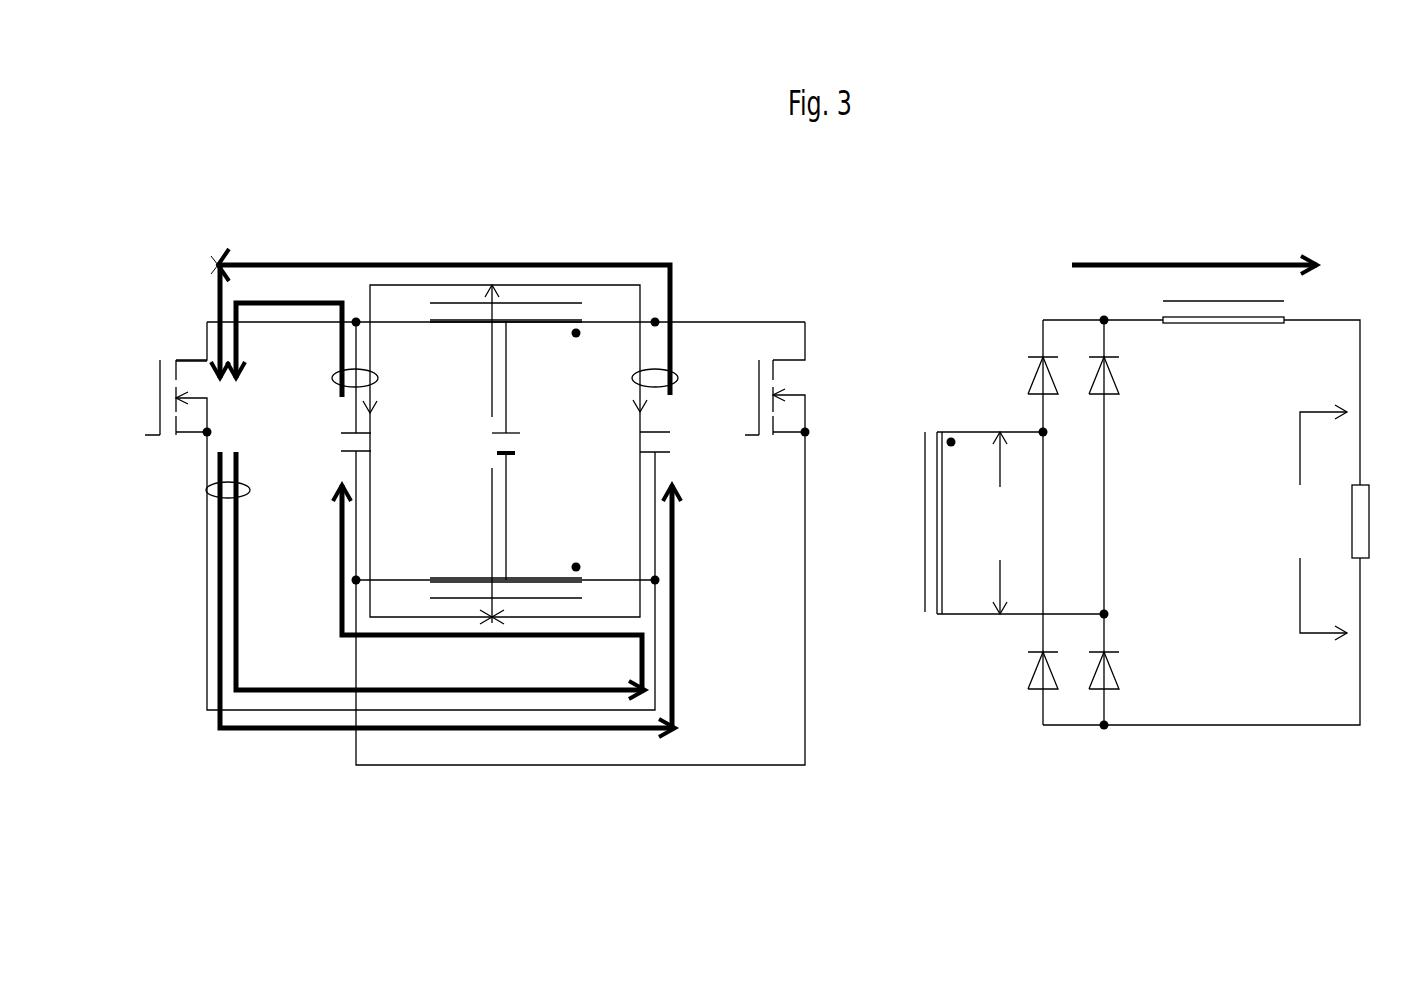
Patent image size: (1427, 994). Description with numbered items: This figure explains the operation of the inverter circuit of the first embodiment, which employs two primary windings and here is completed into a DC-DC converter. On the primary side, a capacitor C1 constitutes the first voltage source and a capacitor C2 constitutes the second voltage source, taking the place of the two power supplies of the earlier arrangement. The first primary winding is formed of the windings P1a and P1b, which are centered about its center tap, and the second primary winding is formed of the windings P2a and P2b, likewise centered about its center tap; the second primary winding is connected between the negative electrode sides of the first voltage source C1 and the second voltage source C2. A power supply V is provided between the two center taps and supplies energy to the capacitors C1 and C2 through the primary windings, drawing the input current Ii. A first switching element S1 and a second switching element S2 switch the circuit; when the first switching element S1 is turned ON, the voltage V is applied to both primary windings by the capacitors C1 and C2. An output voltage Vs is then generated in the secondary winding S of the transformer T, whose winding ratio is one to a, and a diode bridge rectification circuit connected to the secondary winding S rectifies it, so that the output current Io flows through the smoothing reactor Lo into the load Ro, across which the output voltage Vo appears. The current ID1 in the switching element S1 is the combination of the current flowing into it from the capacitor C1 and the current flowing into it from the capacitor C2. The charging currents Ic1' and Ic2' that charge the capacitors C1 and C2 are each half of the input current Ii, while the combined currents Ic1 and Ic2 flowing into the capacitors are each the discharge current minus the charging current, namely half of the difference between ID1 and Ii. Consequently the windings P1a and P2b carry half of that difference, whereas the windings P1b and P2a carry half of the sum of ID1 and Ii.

The first switching element S1 is at (203, 397).
The second switching element S2 is at (803, 397).
The capacitor C1 is at (630, 450).
The capacitor C2 is at (379, 450).
The winding P1a is at (537, 330).
The winding P1b is at (461, 330).
The winding P2a is at (537, 575).
The winding P2b is at (461, 575).
The power supply V is at (512, 469).
The input electrical current Ii is at (484, 454).
The combined electrical current Ic1 is at (683, 379).
The charging electrical current Ic1' is at (617, 388).
The combined electrical current Ic2 is at (326, 379).
The charging electrical current Ic2' is at (402, 388).
The electrical current ID1 is at (206, 490).
The transformer T is at (919, 506).
The secondary winding S is at (950, 523).
The output voltage Vs is at (1005, 523).
The reactor Lo is at (1223, 329).
The output electrical current Io is at (1209, 269).
The output voltage Vo is at (1313, 522).
The load Ro is at (1385, 521).